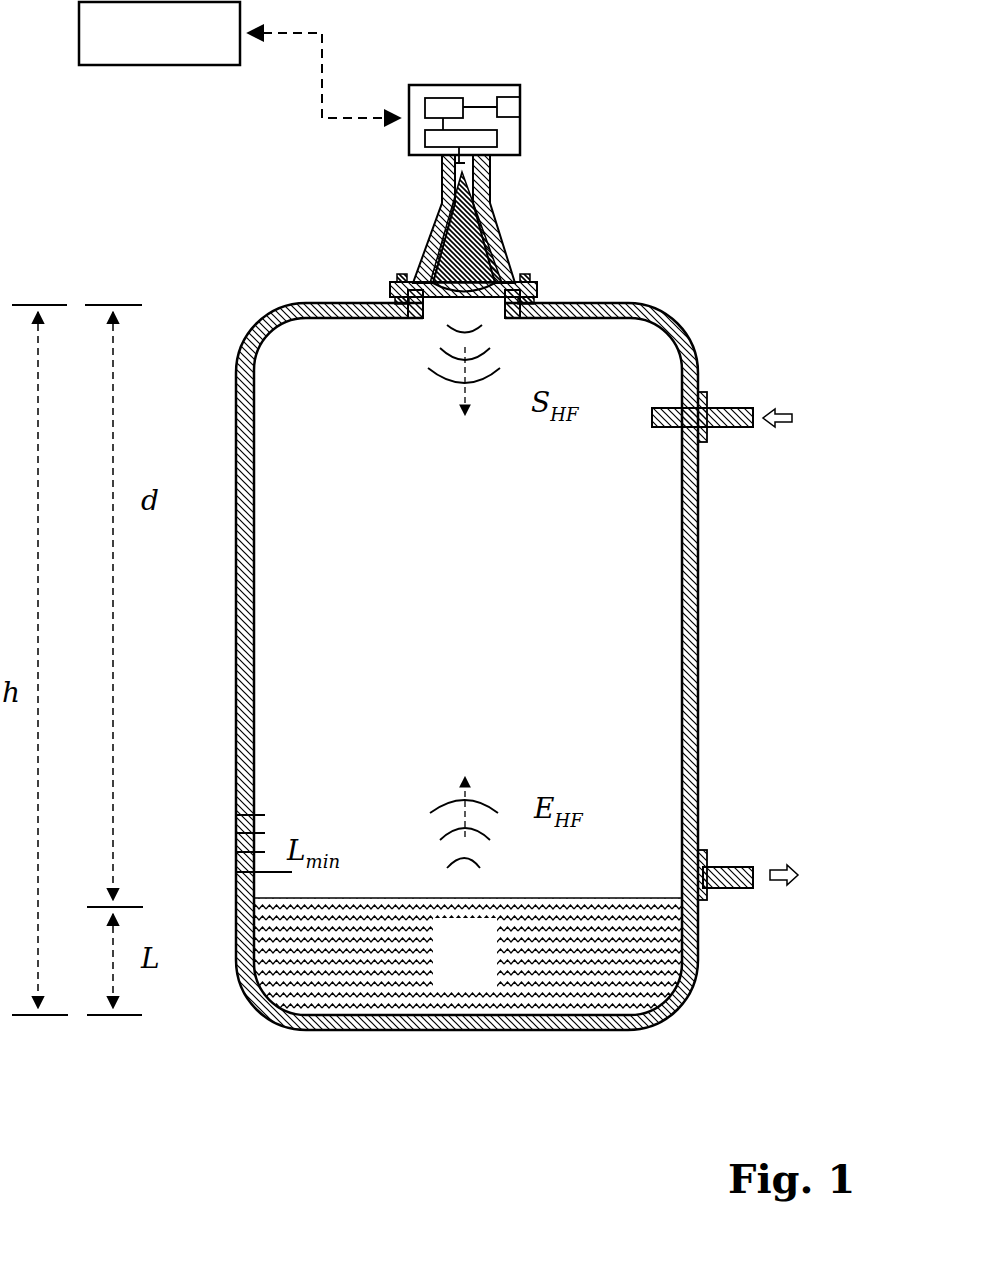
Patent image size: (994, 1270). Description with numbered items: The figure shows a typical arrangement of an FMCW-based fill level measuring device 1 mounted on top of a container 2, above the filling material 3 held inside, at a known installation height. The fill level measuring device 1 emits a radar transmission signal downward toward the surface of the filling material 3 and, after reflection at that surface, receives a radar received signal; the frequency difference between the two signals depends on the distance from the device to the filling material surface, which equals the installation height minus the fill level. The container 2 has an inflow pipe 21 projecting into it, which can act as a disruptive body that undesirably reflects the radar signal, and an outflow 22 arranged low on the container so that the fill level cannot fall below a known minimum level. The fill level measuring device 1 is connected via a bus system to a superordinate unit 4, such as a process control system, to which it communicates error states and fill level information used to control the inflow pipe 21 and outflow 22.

The fill level measuring device 1 is at (612, 170).
The container 2 is at (698, 770).
The filling material 3 is at (476, 975).
The superordinate unit 4 is at (172, 55).
The inflow pipe 21 is at (658, 408).
The outflow 22 is at (753, 890).